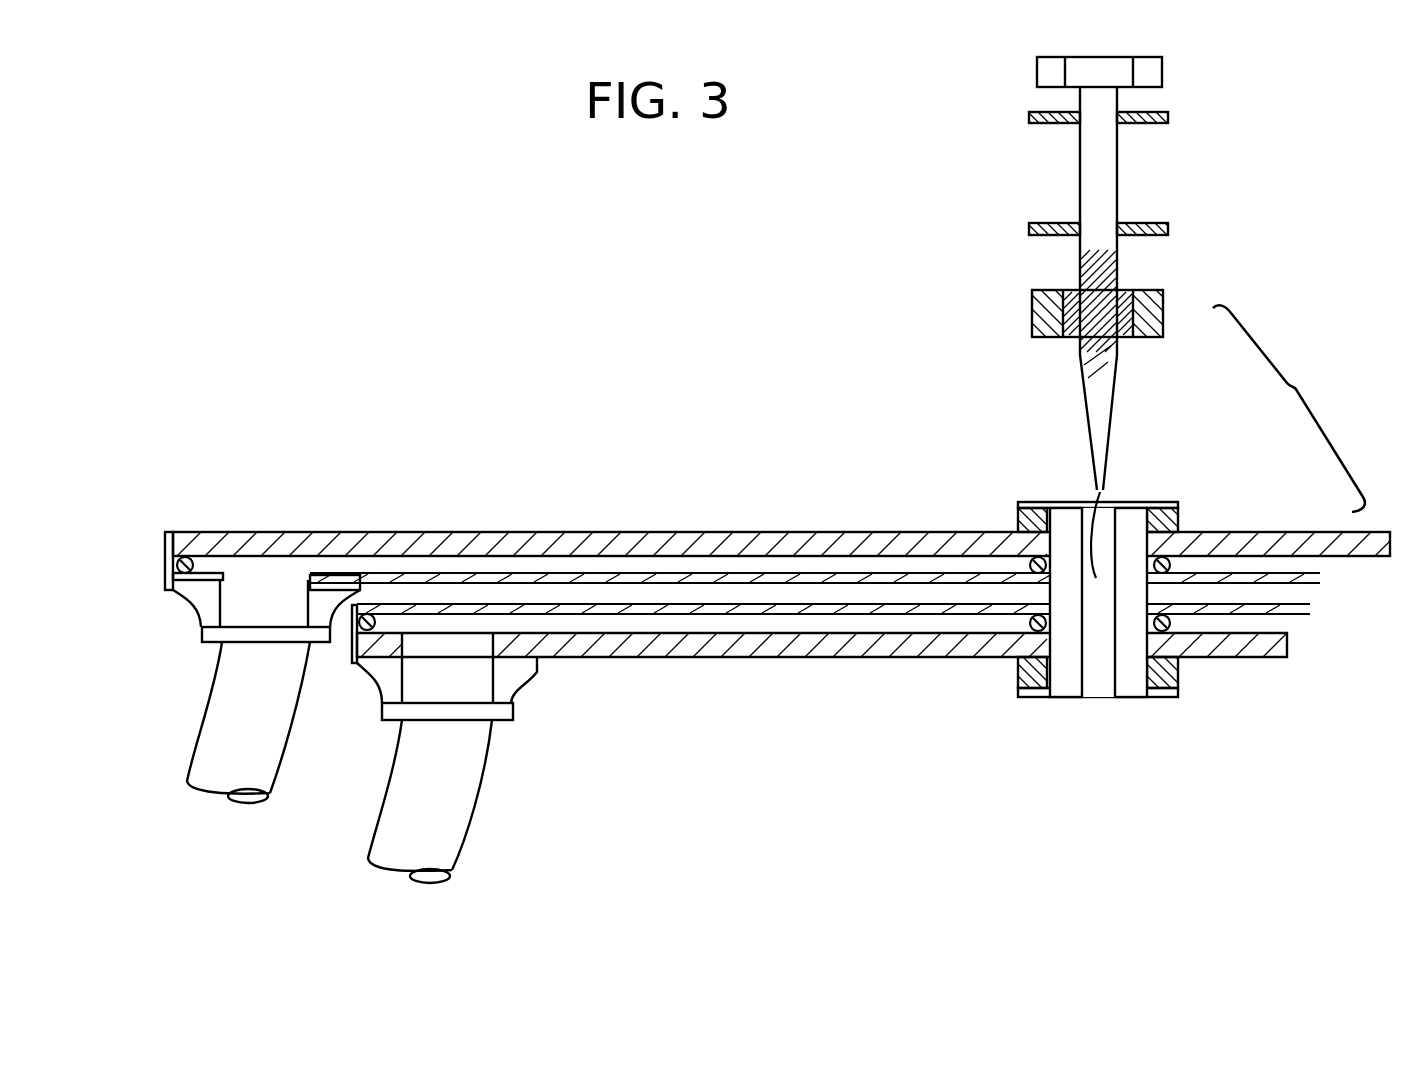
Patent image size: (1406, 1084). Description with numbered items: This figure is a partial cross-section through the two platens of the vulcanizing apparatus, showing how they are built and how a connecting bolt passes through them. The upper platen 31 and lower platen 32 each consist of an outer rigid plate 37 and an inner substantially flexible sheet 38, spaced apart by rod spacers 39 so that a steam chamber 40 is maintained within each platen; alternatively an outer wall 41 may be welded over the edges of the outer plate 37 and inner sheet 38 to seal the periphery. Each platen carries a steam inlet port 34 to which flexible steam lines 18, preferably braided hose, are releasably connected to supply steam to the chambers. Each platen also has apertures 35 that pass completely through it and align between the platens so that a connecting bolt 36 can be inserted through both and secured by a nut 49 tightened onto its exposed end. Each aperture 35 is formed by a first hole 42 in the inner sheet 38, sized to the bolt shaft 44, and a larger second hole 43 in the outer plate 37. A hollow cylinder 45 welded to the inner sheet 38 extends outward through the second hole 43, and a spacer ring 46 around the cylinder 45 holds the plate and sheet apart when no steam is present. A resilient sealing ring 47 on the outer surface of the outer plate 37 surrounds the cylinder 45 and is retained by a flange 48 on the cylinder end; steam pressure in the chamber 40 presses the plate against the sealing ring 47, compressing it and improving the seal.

The steam lines 18 is at (213, 697).
The upper platen 31 is at (255, 512).
The lower platen 32 is at (686, 670).
The steam inlet port 34 is at (195, 612).
The aperture 35 is at (1095, 680).
The connecting bolt 36 is at (1162, 64).
The outer rigid plate 37 is at (380, 532).
The inner substantially flexible sheet 38 is at (590, 575).
The rod spacer 39 is at (175, 558).
The steam chamber 40 is at (500, 565).
The outer wall 41 is at (167, 540).
The first hole 42 is at (1100, 500).
The second hole 43 is at (1035, 550).
The shaft 44 is at (1103, 190).
The hollow cylinder 45 is at (1065, 523).
The spacer ring 46 is at (1037, 630).
The sealing ring 47 is at (1178, 672).
The flange 48 is at (1135, 697).
The nut 49 is at (1163, 330).